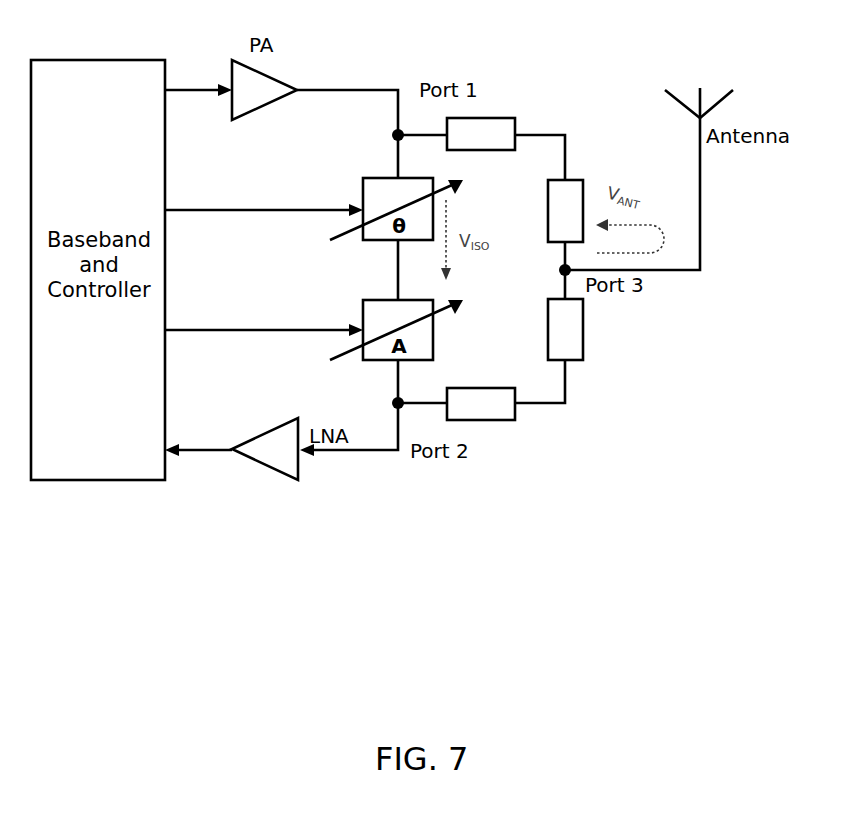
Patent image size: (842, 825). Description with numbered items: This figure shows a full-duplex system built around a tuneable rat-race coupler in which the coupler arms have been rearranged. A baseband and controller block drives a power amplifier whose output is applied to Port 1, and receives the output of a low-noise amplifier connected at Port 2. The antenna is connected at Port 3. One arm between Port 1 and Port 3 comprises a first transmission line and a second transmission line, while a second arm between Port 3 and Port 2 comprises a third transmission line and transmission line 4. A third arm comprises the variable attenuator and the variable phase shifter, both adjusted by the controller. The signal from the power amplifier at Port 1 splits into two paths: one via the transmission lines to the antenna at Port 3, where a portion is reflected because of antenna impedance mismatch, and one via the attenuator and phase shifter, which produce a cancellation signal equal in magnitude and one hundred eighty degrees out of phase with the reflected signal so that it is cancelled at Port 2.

The Port 1 is at (456, 134).
The Port 2 is at (565, 211).
The Port 3 is at (565, 329).
The transmission line TL4 4 is at (456, 404).